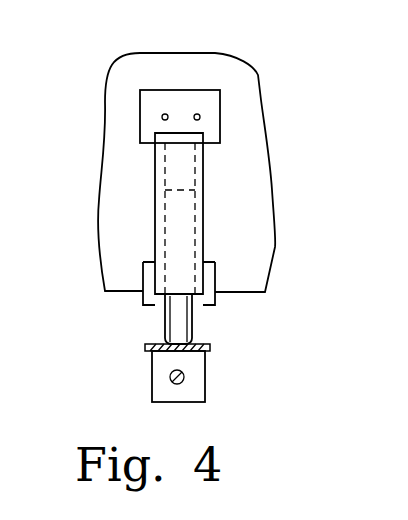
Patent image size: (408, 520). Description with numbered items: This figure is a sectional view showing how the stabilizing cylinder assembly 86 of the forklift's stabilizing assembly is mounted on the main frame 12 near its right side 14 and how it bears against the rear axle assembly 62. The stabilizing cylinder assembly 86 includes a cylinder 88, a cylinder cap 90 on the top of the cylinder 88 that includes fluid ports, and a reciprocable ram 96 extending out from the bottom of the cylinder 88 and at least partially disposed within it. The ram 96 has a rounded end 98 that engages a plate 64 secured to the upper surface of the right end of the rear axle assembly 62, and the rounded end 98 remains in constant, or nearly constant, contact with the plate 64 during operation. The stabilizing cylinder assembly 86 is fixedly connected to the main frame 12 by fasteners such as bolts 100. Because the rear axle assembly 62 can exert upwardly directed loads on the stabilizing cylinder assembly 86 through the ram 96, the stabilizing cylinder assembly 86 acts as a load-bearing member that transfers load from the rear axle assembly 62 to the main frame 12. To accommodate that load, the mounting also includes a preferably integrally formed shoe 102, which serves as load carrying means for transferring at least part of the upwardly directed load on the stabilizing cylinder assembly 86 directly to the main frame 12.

The main frame 12 is at (143, 297).
The right side 14 is at (247, 192).
The rear axle assembly 62 is at (112, 386).
The plate 64 is at (208, 348).
The stabilizing cylinder assembly 86 is at (122, 168).
The cylinder 88 is at (153, 212).
The cylinder cap 90 is at (156, 90).
The ram 96 is at (163, 326).
The rounded end 98 is at (193, 338).
The bolts 100 is at (168, 114).
The shoe 102 is at (116, 306).